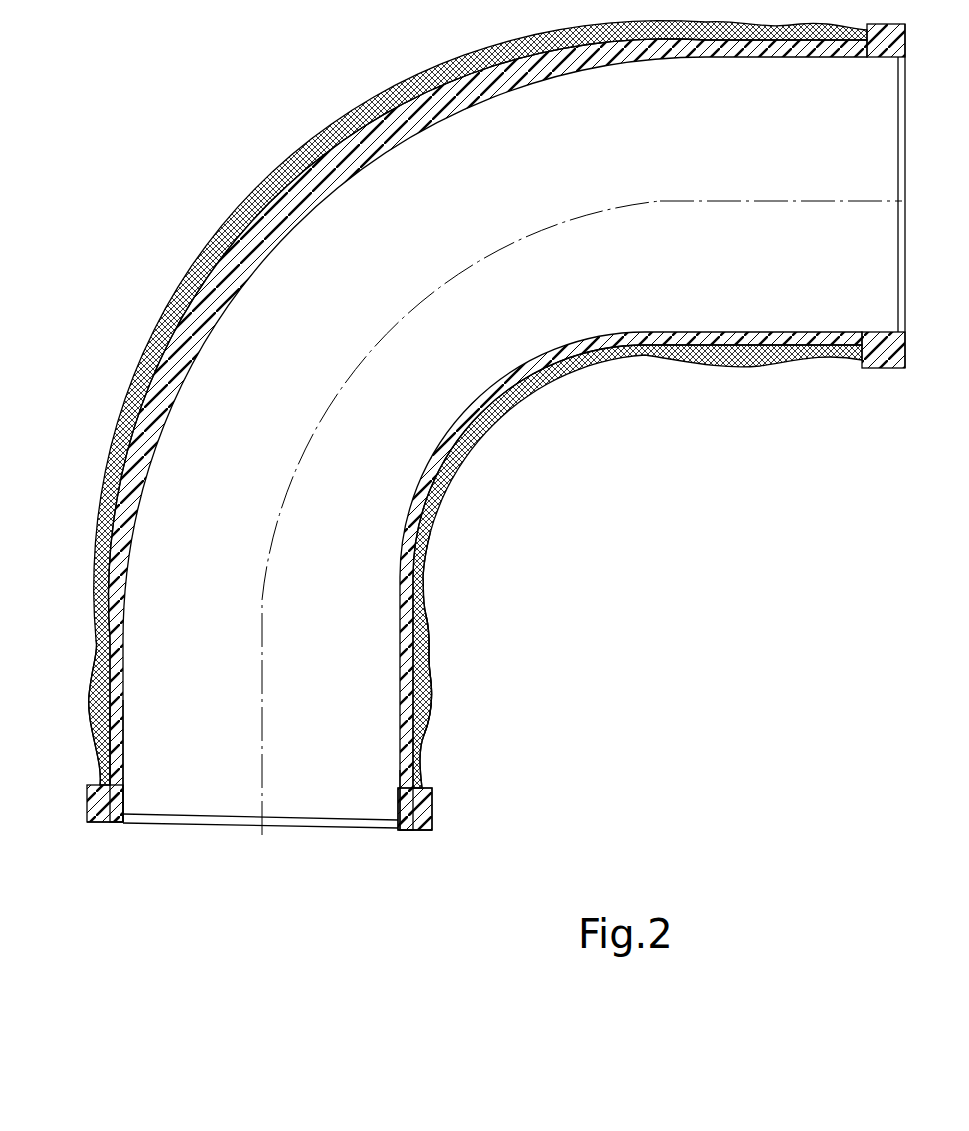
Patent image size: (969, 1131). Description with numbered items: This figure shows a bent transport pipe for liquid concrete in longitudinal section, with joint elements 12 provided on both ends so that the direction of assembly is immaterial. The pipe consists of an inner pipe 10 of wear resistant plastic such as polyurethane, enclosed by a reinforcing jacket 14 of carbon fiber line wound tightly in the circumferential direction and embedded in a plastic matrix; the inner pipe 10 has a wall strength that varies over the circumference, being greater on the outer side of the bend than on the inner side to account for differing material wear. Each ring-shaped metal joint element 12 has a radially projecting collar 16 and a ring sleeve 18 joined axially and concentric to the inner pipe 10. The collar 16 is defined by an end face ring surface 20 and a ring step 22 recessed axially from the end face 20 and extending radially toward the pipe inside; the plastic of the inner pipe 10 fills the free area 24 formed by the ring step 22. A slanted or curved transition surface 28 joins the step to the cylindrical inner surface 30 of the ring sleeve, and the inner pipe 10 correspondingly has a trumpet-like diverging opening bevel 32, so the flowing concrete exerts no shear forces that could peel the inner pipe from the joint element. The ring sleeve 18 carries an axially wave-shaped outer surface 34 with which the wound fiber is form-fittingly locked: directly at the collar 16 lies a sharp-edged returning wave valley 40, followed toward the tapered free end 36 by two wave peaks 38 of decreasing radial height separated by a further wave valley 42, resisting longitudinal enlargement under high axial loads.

The inner pipe 10 is at (227, 228).
The joint element 12 is at (104, 772).
The reinforcing jacket 14 is at (140, 372).
The collar 16 is at (98, 808).
The ring sleeve 18 is at (97, 690).
The end face ring surface 20 is at (90, 824).
The ring step 22 is at (415, 832).
The free area 24 is at (415, 809).
The transition surface 28 is at (400, 832).
The cylindrical inner surface 30 is at (400, 699).
The opening bevel 32 is at (312, 822).
The wave-shaped outer surface 34 is at (428, 672).
The free end 36 is at (427, 570).
The wave peaks 38 is at (428, 608).
The wave valley 40 is at (428, 770).
The further wave valley 42 is at (430, 655).